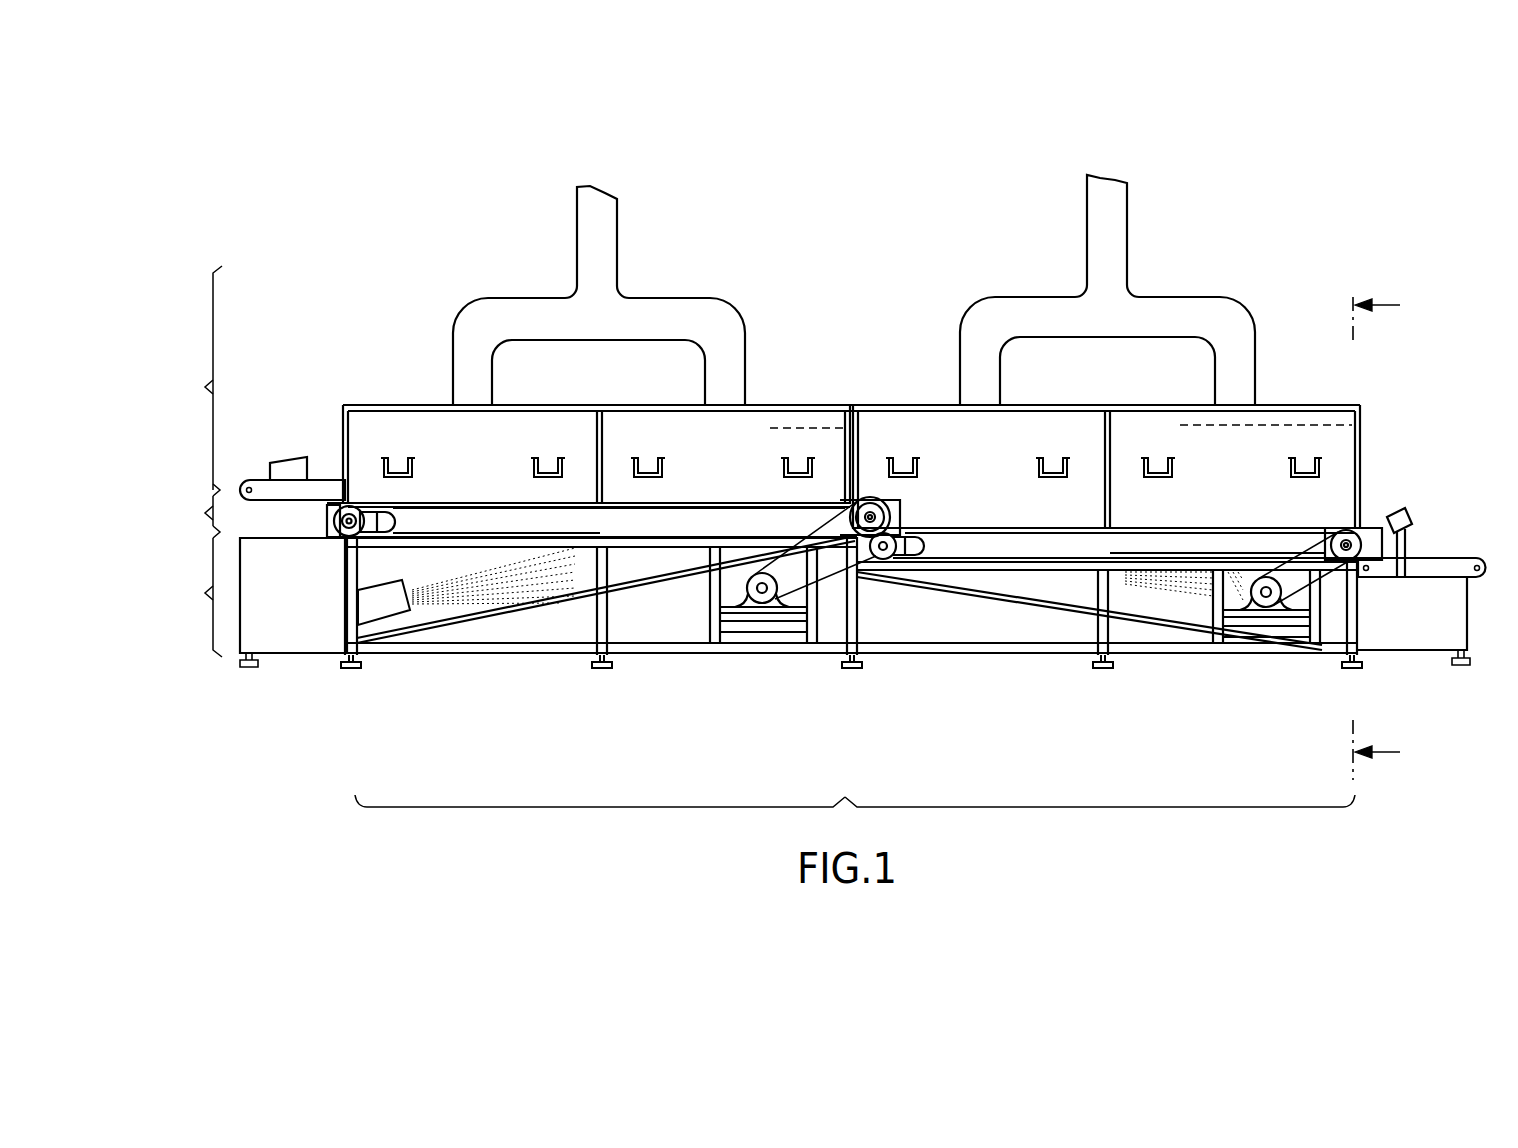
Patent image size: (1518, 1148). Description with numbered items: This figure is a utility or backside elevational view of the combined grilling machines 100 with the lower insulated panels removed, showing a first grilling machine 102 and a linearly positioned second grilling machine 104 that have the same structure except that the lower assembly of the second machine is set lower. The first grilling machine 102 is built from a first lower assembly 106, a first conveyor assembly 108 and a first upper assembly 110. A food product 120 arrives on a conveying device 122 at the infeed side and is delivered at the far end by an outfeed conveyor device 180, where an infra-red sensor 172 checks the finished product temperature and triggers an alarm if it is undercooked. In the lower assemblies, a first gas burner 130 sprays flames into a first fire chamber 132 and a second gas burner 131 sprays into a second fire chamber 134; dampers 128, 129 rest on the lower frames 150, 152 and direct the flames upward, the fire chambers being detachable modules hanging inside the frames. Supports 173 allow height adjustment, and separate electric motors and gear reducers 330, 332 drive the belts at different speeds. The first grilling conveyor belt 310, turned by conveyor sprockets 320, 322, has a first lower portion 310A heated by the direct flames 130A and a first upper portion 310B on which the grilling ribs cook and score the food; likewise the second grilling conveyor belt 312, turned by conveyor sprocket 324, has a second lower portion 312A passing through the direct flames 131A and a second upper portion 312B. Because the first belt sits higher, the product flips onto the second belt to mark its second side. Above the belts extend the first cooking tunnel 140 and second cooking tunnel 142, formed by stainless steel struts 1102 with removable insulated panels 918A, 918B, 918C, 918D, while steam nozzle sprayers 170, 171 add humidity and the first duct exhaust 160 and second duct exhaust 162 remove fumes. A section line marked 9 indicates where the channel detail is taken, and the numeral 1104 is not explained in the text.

The combined grilling machines 100 is at (803, 763).
The first grilling machine 102 is at (600, 827).
The second grilling machine 104 is at (1100, 824).
The first lower assembly 106 is at (191, 597).
The first conveyor assembly 108 is at (190, 517).
The first upper assembly 110 is at (191, 381).
The food product 120 is at (282, 460).
The conveying device 122 is at (250, 480).
The damper 128 is at (485, 615).
The damper 129 is at (1190, 627).
The first gas burner 130 is at (278, 640).
The direct flames 130A is at (548, 580).
The second gas burner 131 is at (1460, 640).
The direct flames 131A is at (1170, 590).
The first fire chamber 132 is at (450, 615).
The second fire chamber 134 is at (1050, 585).
The first cooking tunnel 140 is at (411, 428).
The second cooking tunnel 142 is at (1198, 490).
The first lower frame 150 is at (348, 605).
The second lower frame 152 is at (1100, 625).
The first duct exhaust 160 is at (637, 313).
The second duct exhaust 162 is at (1127, 230).
The steam nozzle sprayer 170 is at (808, 428).
The steam nozzle sprayer 171 is at (1320, 425).
The infra-red sensor 172 is at (1399, 512).
The supports 173 is at (352, 668).
The outfeed conveyor device 180 is at (1455, 558).
The first grilling conveyor belt 310 is at (718, 503).
The first lower portion 310A is at (440, 600).
The first upper portion 310B is at (488, 503).
The second grilling conveyor belt 312 is at (980, 528).
The second lower portion 312A is at (1123, 572).
The second upper portion 312B is at (1256, 528).
The conveyor sprocket 320 is at (345, 510).
The conveyor sprocket 322 is at (862, 500).
The conveyor sprocket 324 is at (888, 557).
The first electric motor and gear reducer 330 is at (760, 595).
The second electric motor and gear reducer 332 is at (1268, 600).
The removable insulated panel 918A is at (542, 428).
The removable insulated panel 918B is at (670, 428).
The removable insulated panel 918C is at (930, 430).
The removable insulated panel 918D is at (1340, 445).
The stainless steel struts 1102 is at (435, 405).
The rinse exhaust plenum 1104 is at (1133, 405).
The section line 9- 9 is at (1376, 536).